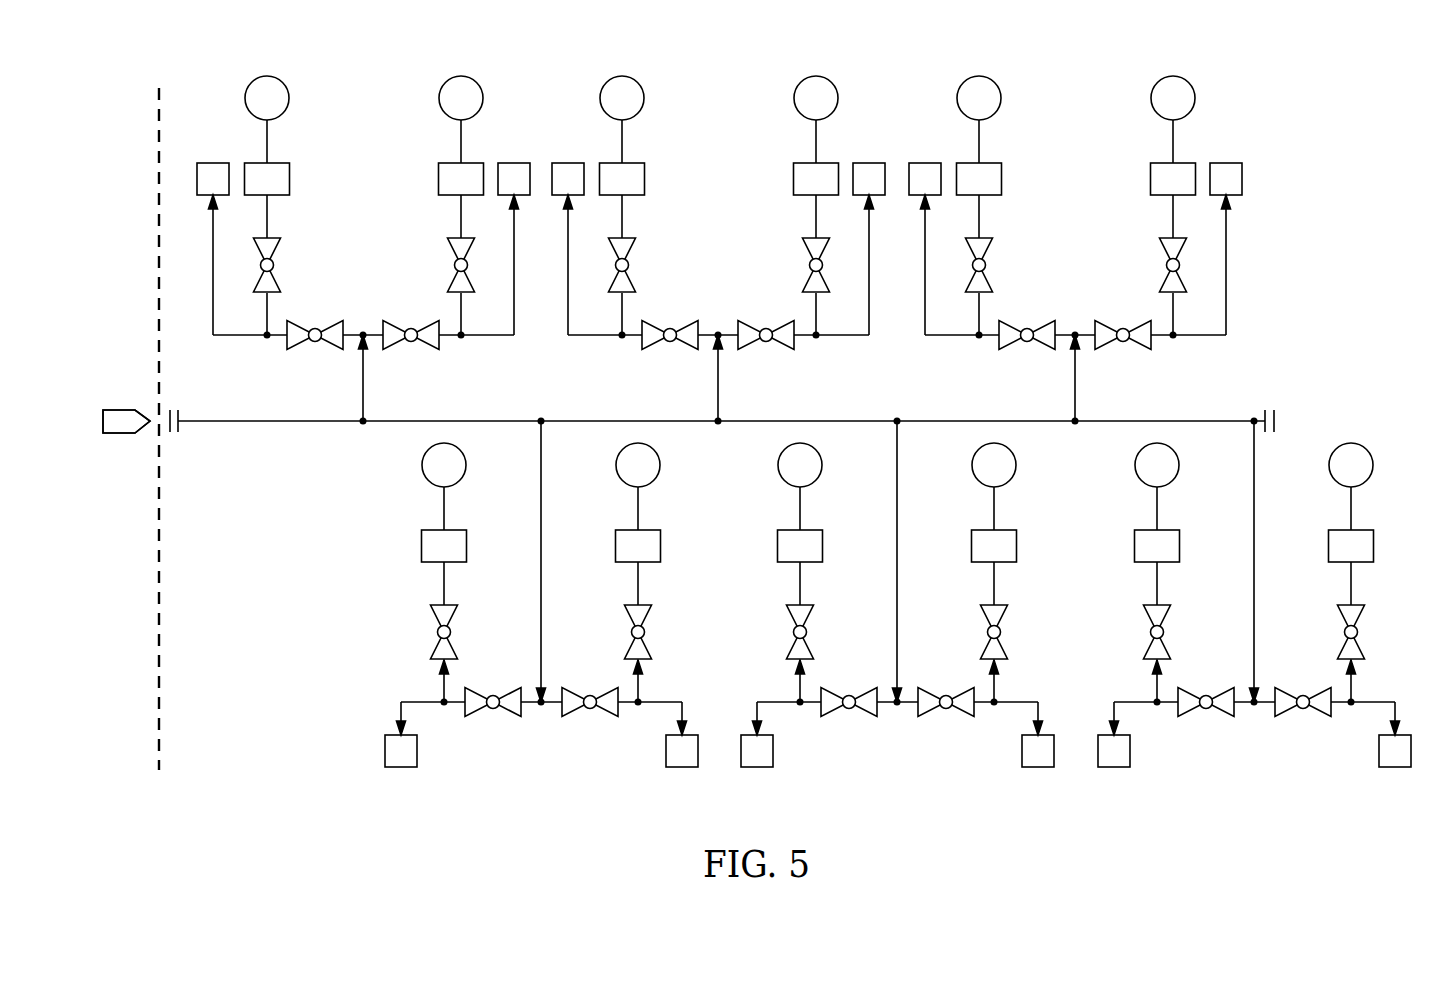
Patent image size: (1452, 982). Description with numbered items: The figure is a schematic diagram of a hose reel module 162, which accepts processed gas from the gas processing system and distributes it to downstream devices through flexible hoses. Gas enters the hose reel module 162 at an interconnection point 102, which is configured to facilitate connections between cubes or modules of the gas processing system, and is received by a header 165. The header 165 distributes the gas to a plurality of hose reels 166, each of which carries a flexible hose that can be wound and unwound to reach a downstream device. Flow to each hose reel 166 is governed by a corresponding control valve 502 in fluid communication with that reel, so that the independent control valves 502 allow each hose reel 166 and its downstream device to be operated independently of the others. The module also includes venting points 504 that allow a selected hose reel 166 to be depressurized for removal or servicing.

The hose reel module 162 is at (539, 60).
The hose reel 166 is at (203, 163).
The interconnection point 102 is at (122, 410).
The header 165 is at (126, 421).
The control valve 502 is at (300, 349).
The venting point 504 is at (280, 253).